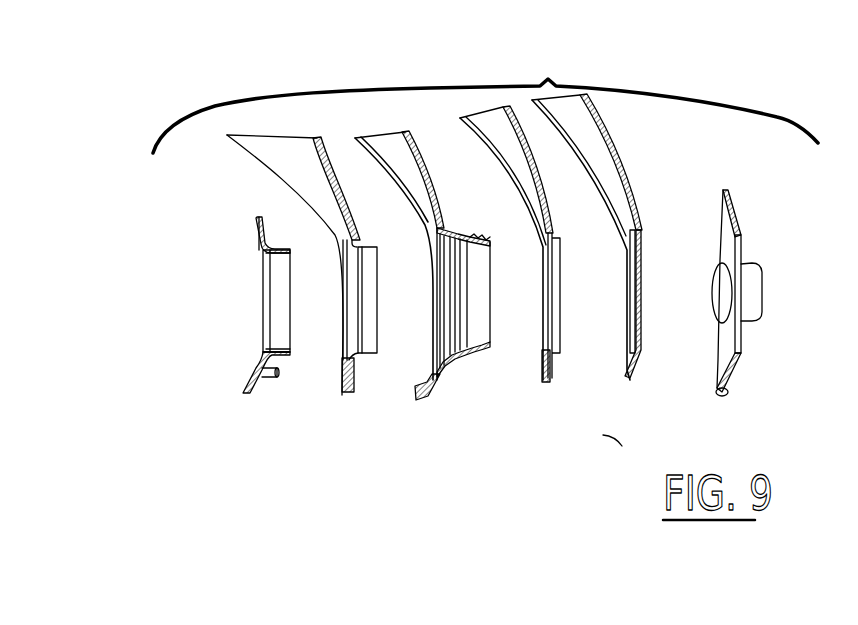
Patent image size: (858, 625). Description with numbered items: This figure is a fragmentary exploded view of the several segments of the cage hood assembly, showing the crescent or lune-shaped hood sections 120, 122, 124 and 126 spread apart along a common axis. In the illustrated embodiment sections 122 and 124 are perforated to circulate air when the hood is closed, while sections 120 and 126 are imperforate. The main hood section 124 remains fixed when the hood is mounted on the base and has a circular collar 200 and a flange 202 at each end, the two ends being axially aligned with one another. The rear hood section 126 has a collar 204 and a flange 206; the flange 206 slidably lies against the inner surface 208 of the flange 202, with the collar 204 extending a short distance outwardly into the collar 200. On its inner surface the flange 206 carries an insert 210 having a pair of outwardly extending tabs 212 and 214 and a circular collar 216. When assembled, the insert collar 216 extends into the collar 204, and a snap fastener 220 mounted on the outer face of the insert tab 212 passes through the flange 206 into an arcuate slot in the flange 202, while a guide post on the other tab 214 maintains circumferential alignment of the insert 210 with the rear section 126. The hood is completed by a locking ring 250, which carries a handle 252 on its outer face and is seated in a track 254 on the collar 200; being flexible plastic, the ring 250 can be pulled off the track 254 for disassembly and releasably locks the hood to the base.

The hood section 120 is at (668, 437).
The hood section 122 is at (468, 500).
The main hood section 124 is at (415, 402).
The rear hood section 126 is at (213, 468).
The circular collar 200 is at (481, 221).
The flange 202 is at (446, 210).
The collar 204 is at (368, 358).
The flange 206 is at (337, 383).
The inner surface 208 is at (437, 225).
The insert 210 is at (255, 317).
The insert tab 212 is at (258, 375).
The insert tab 214 is at (256, 230).
The insert collar 216 is at (272, 251).
The snap fastener 220 is at (245, 396).
The locking ring 250 is at (740, 413).
The handle 252 is at (758, 290).
The track 254 is at (485, 240).